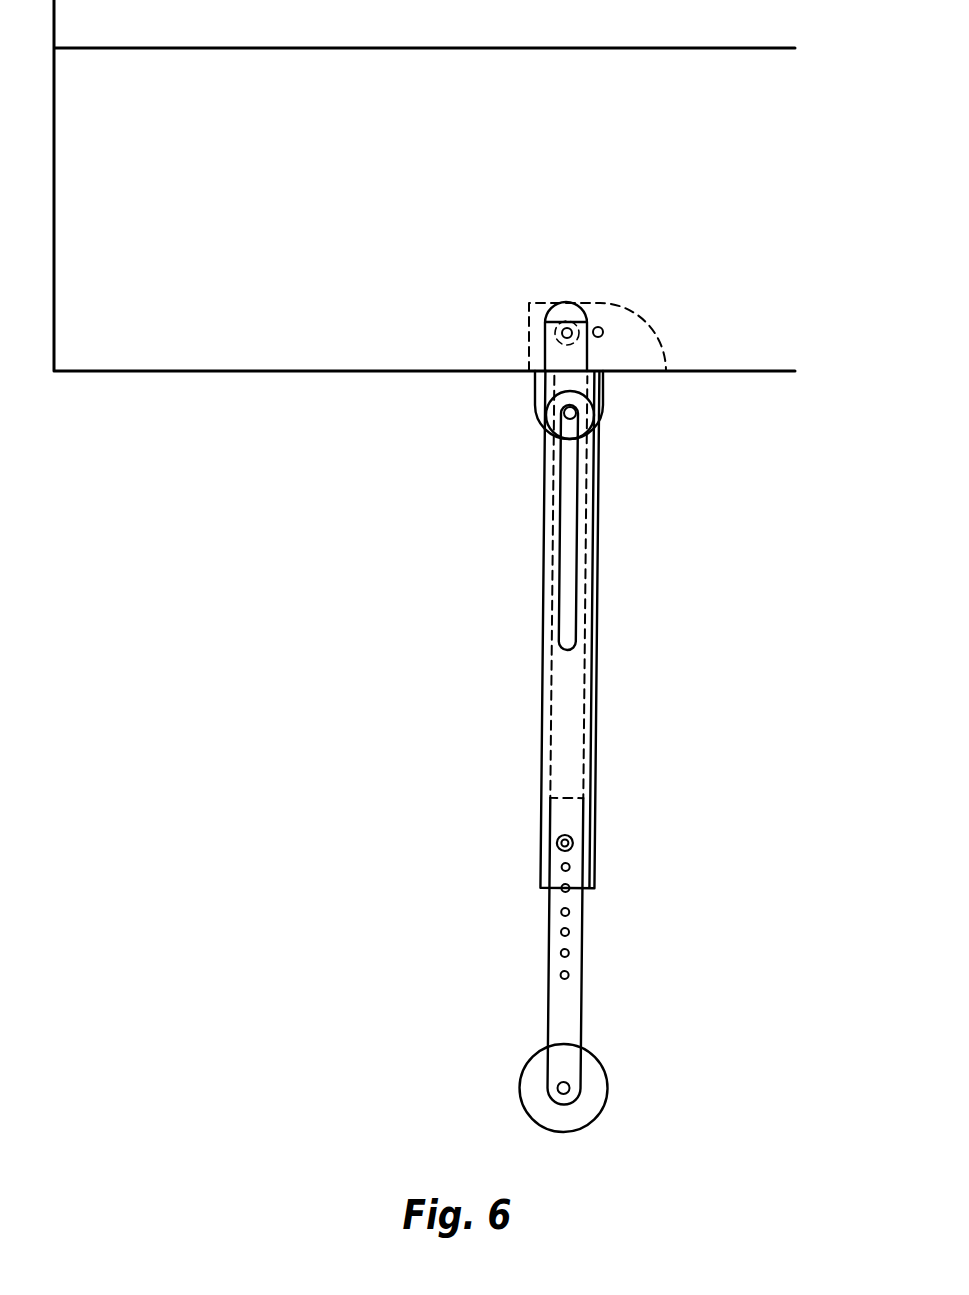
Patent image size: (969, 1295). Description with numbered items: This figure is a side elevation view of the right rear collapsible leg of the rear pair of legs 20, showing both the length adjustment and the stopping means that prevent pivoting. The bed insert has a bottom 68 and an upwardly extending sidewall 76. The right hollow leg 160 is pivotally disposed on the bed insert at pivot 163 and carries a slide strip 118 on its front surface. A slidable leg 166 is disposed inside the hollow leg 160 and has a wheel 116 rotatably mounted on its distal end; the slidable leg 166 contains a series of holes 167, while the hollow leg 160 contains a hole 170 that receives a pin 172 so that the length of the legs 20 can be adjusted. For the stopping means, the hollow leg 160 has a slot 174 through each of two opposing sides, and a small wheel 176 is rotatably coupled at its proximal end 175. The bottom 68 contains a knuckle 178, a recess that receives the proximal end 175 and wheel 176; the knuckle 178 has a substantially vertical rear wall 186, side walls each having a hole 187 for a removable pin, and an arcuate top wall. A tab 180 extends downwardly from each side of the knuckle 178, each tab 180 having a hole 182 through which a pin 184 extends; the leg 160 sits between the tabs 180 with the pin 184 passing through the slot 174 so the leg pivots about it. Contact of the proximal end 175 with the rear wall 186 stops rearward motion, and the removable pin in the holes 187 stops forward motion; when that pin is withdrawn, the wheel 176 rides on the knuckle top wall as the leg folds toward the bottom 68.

The rear pair of legs 20 is at (630, 793).
The bottom 68 is at (137, 372).
The sidewall 76 is at (262, 331).
The wheel 116 is at (621, 1097).
The slide strip 118 is at (602, 655).
The right hollow leg 160 is at (597, 728).
The pivot 163 is at (627, 450).
The slidable leg 166 is at (593, 1025).
The series of holes 167 is at (582, 931).
The hole 170 is at (565, 838).
The pin 172 is at (581, 848).
The slot 174 is at (570, 587).
The proximal end 175 is at (544, 323).
The small wheel 176 is at (568, 305).
The knuckle 178 is at (633, 343).
The tab 180 is at (604, 395).
The hole 182 is at (544, 396).
The pin 184 is at (542, 424).
The rear wall 186 is at (528, 340).
The hole 187 is at (600, 326).